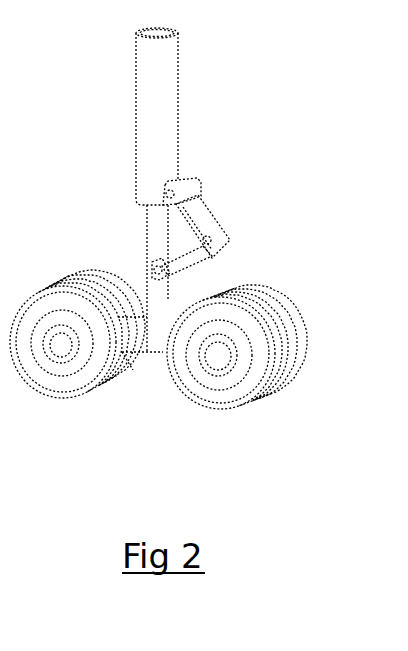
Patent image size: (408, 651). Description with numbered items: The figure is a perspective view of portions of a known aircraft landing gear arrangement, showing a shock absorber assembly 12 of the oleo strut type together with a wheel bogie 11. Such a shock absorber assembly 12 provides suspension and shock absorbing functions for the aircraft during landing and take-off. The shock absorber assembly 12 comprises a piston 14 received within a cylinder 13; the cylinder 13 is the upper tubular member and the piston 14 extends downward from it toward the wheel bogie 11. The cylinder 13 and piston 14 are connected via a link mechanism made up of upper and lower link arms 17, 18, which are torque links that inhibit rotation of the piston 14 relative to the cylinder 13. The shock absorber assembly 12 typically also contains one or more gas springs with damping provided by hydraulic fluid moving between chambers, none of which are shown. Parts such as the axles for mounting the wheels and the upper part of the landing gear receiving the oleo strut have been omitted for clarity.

The wheel bogie 11 is at (285, 330).
The shock absorber assembly 12 is at (236, 71).
The cylinder 13 is at (170, 110).
The piston 14 is at (153, 235).
The upper link arm 17 is at (187, 208).
The lower link arm 18 is at (185, 271).